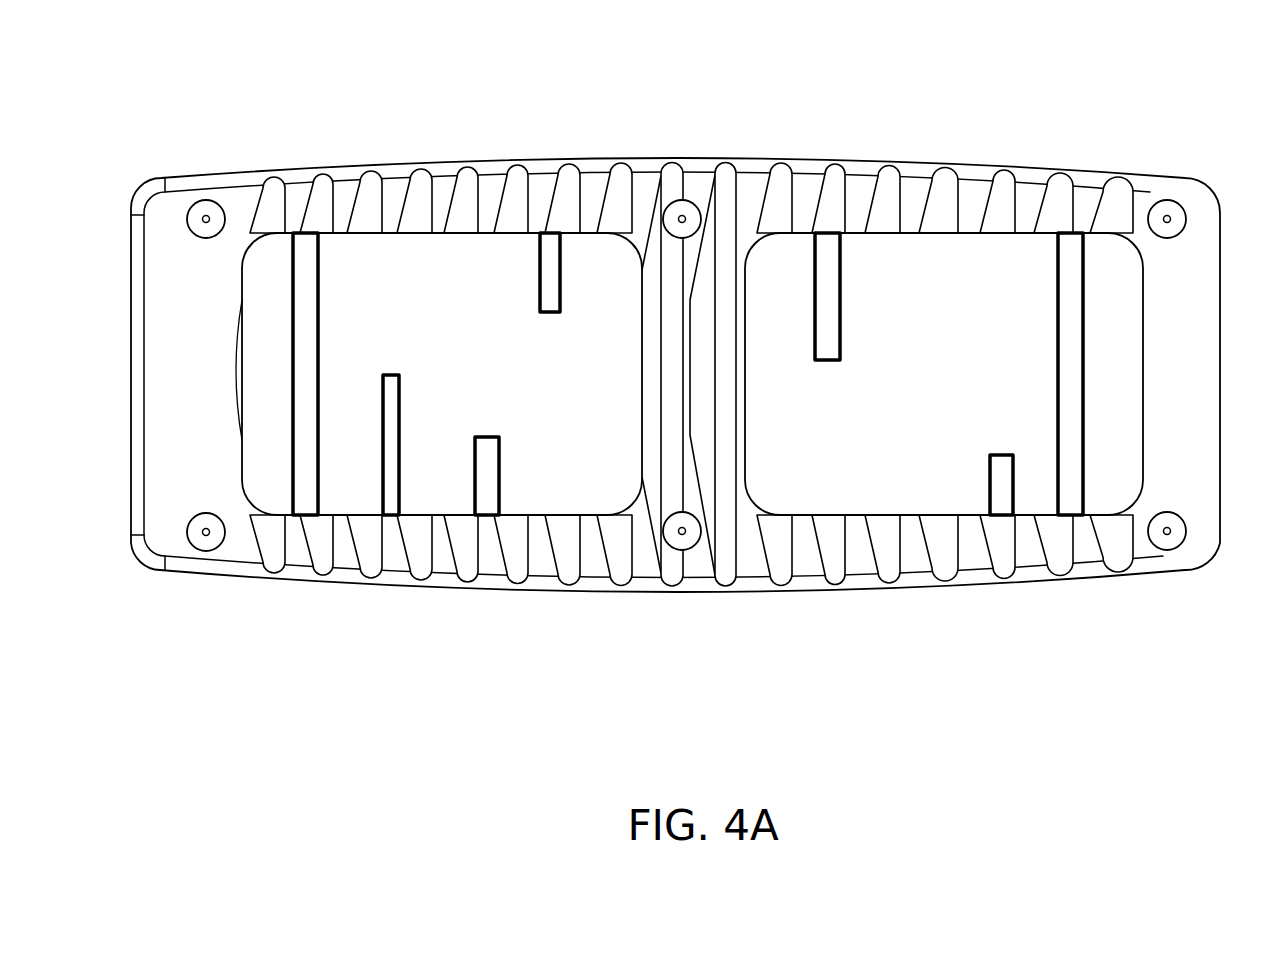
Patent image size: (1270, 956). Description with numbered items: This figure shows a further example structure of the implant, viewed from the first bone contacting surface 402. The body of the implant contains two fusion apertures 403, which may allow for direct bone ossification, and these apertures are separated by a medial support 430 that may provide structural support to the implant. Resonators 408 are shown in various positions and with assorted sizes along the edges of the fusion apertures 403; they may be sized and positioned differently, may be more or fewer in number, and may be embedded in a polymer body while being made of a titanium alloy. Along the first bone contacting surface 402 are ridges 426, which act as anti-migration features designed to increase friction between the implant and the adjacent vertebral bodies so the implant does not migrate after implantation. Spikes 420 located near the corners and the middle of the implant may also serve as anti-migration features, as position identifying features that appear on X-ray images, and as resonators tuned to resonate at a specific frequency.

The first bone contacting surface 402 is at (1088, 191).
The fusion apertures 403 is at (387, 285).
The resonators 408 is at (548, 226).
The spikes 420 is at (206, 219).
The ridges 426 is at (878, 562).
The medial support 430 is at (656, 572).